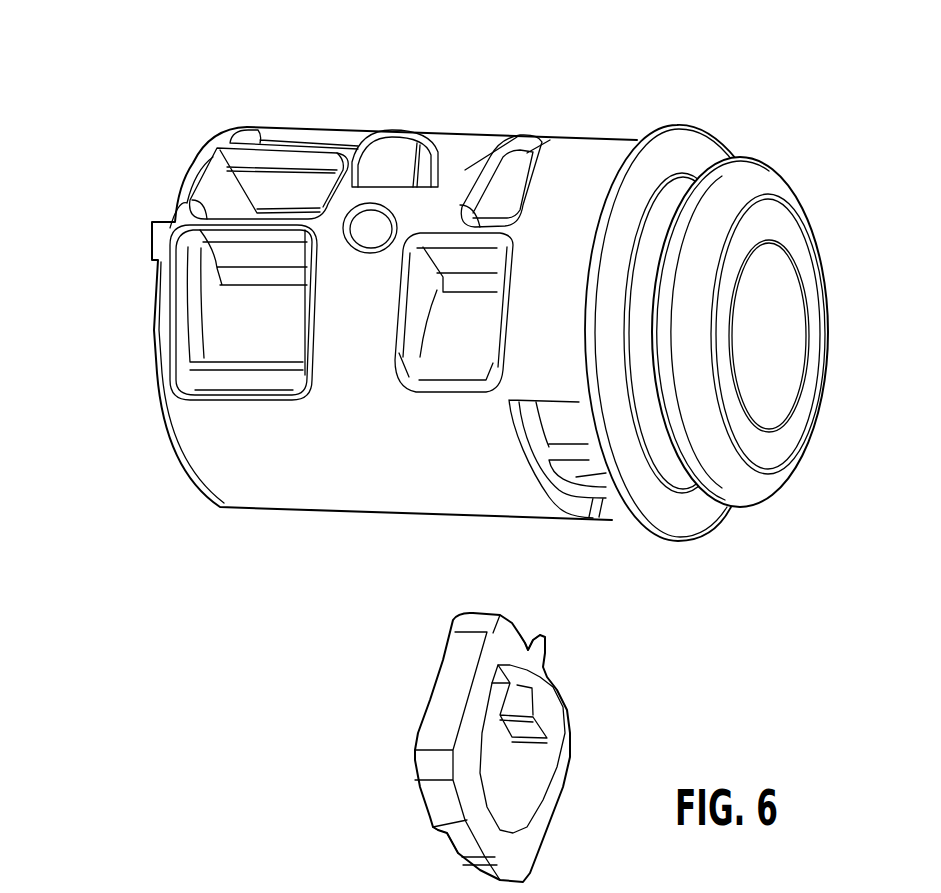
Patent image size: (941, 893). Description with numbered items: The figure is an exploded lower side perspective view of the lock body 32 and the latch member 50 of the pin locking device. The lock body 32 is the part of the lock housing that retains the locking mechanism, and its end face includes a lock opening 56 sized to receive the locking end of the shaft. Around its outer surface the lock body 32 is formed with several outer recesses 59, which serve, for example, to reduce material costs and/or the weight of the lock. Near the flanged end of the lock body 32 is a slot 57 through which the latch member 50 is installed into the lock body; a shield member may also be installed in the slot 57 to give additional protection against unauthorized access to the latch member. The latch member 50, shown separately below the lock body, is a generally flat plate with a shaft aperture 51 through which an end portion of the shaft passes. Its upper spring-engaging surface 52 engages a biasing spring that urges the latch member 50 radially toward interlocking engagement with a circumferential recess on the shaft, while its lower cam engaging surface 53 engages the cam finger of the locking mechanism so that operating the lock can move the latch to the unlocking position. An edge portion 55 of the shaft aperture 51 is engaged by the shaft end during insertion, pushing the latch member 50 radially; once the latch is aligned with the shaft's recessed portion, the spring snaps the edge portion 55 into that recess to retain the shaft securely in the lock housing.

The lock body 32 is at (306, 82).
The outer recesses 59 is at (497, 333).
The lock opening 56 is at (783, 327).
The slot 57 is at (610, 520).
The latch member 50 is at (530, 750).
The shaft aperture 51 is at (514, 800).
The upper spring-engaging surface 52 is at (543, 640).
The edge portion 55 is at (527, 690).
The lower cam engaging surface 53 is at (452, 845).